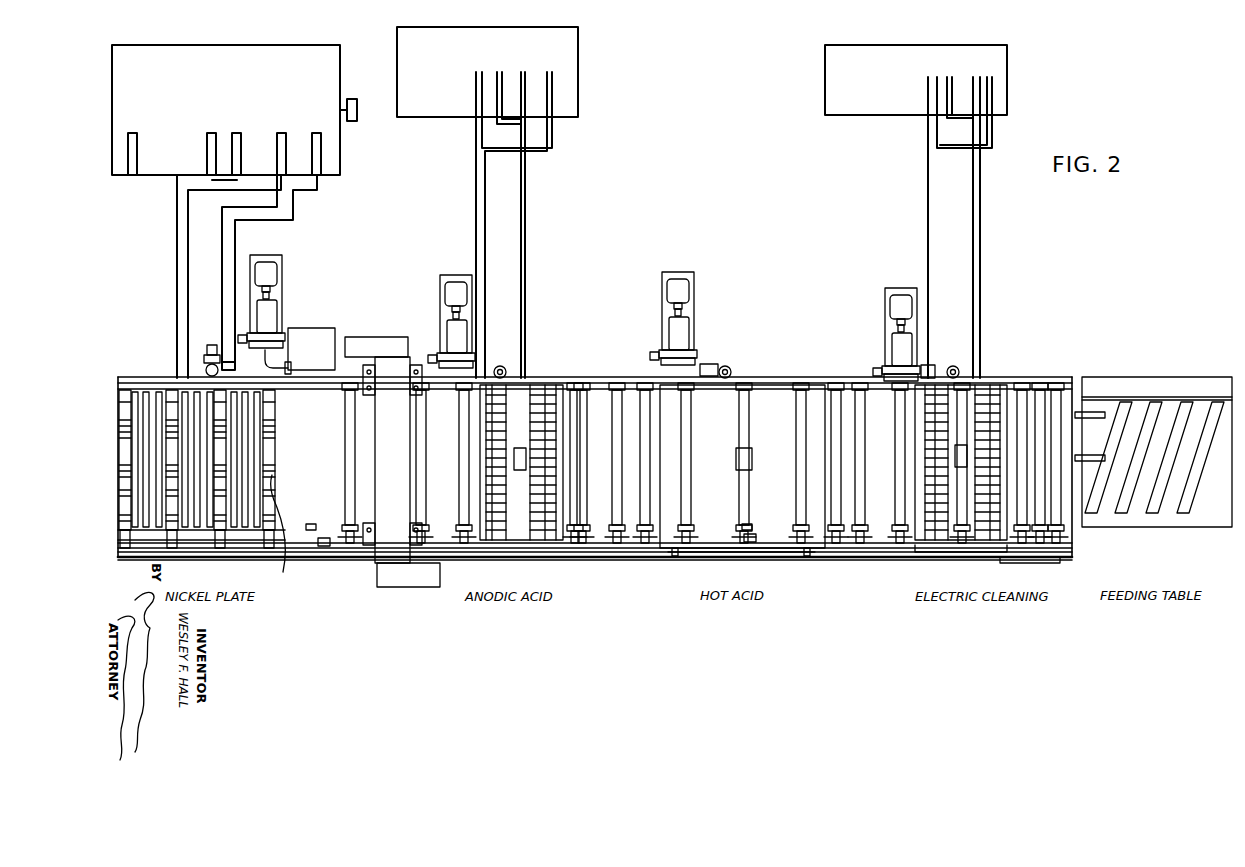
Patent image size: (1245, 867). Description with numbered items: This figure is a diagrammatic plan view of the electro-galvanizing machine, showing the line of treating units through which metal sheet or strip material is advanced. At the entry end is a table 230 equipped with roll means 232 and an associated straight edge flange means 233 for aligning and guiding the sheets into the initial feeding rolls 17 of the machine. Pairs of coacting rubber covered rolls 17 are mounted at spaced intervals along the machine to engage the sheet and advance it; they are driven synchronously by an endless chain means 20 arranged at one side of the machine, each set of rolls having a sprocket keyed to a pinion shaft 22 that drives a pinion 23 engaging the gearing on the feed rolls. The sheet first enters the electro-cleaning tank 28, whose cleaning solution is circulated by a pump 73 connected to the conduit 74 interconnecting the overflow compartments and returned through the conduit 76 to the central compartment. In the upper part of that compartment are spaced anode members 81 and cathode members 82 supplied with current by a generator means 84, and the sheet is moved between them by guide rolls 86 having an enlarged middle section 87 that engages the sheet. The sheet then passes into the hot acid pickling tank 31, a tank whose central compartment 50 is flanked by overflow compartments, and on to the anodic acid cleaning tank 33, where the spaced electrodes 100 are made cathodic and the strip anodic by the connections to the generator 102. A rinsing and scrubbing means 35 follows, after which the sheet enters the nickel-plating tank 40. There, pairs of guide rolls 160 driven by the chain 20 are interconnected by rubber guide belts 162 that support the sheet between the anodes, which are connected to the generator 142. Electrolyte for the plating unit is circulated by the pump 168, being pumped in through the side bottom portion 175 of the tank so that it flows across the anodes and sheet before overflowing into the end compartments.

The generator 142 is at (302, 57).
The generator 102 is at (579, 66).
The generator means 84 is at (891, 103).
The nickel-plating tank 40 is at (150, 376).
The side bottom inlet portion 175 is at (208, 375).
The pump 168 is at (270, 313).
The rubber guide belt 162 is at (294, 378).
The guide roll 160 is at (289, 534).
The rinsing and scrubbing means 35 is at (369, 346).
The rolls 17 is at (425, 451).
The pinion 23 is at (311, 526).
The pinion shaft 22 is at (325, 544).
The anodic acid cleaning tank 33 is at (577, 374).
The electrodes 100 is at (546, 566).
The hot acid pickling tank 31 is at (752, 373).
The central compartment 50 is at (778, 371).
The endless chain means 20 is at (857, 549).
The pump 73 is at (891, 346).
The conduit 76 is at (929, 365).
The guide rolls 86 is at (954, 373).
The anode members 81 is at (985, 390).
The electro-cleaning tank 28 is at (1041, 370).
The cathode members 82 is at (940, 525).
The enlarged middle section 87 is at (968, 453).
The conduit 74 is at (1014, 551).
The straight edge flange means 233 is at (1180, 397).
The roll means 232 is at (1150, 508).
The table 230 is at (1155, 523).